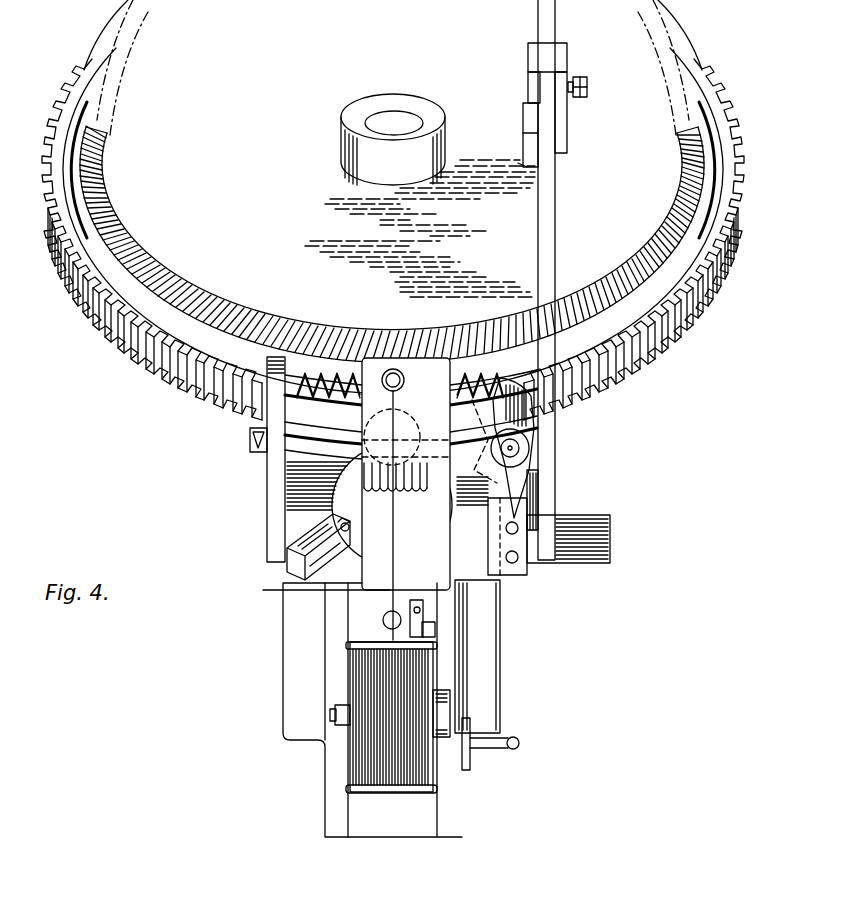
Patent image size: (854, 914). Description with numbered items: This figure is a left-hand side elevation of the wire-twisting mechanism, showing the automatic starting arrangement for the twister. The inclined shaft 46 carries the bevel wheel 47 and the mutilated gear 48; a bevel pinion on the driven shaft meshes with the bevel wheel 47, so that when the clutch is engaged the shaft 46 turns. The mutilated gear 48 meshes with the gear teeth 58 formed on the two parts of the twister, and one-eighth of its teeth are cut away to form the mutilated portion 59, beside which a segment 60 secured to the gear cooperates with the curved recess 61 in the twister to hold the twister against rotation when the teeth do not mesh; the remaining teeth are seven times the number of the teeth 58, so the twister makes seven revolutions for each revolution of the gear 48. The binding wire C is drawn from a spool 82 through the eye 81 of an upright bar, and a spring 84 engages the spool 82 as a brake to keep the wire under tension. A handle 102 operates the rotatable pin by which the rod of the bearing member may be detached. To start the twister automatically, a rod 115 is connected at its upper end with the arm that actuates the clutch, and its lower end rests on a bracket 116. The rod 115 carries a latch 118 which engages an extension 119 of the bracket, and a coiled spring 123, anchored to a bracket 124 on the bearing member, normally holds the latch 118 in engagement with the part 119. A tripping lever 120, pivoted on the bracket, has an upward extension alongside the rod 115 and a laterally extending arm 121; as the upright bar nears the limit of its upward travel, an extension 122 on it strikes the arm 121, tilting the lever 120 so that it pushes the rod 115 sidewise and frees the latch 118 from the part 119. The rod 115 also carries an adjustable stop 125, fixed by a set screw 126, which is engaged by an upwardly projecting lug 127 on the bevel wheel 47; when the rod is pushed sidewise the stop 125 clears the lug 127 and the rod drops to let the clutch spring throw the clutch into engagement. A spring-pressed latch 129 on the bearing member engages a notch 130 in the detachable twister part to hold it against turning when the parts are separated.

The inclined shaft 46 is at (381, 118).
The bevel gear 47 is at (150, 248).
The mutilated gear 48 is at (645, 320).
The gear teeth 58 is at (432, 452).
The mutilated portion 59 is at (411, 416).
The segment 60 is at (252, 446).
The curved recess 61 is at (378, 515).
The eye 81 is at (405, 380).
The spool 82 is at (350, 762).
The spring 84 is at (413, 625).
The handle 102 is at (512, 752).
The rod 115 is at (540, 243).
The bracket 116 is at (593, 543).
The latch 118 is at (539, 493).
The extension 119 is at (496, 527).
The tripping lever 120 is at (531, 393).
The laterally extending arm 121 is at (530, 448).
The extension 122 is at (445, 352).
The coiled spring 123 is at (318, 360).
The bracket 124 is at (268, 494).
The stop 125 is at (537, 57).
The set screw 126 is at (590, 86).
The lug 127 is at (527, 127).
The spring-pressed latch 129 is at (336, 532).
The notch 130 is at (340, 525).
The binding wire C is at (314, 593).